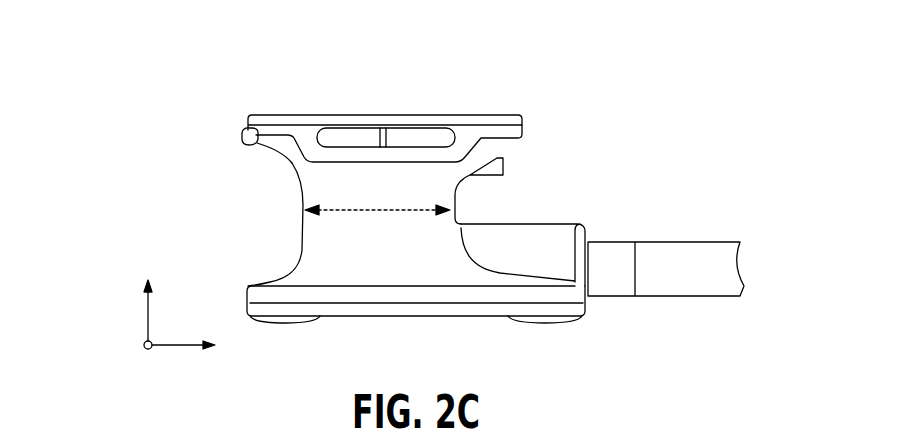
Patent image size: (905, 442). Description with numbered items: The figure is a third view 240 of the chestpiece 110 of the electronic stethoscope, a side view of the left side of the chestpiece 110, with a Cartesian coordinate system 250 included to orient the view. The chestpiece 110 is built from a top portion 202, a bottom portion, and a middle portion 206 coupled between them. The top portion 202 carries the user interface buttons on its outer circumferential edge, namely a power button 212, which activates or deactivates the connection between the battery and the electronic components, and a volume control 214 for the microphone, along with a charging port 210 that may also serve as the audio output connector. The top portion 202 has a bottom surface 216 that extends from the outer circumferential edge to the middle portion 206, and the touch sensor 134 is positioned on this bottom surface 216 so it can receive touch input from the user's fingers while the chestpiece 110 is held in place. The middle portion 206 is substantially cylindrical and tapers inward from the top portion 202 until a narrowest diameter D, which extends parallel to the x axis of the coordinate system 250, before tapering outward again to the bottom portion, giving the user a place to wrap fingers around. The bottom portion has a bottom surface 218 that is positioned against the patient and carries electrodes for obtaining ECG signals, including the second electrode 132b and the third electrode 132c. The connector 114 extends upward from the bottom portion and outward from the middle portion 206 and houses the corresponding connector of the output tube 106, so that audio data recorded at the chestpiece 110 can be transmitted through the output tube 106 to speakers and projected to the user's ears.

The chestpiece 110 is at (389, 210).
The top portion 202 is at (282, 117).
The volume control 214 is at (357, 137).
The touch sensor 134 is at (418, 152).
The power button 212 is at (242, 134).
The bottom surface 216 is at (272, 150).
The middle portion 206 is at (316, 242).
The narrowest diameter D is at (347, 210).
The charging port 210 is at (503, 158).
The connector 114 is at (553, 234).
The output tube 106 is at (693, 252).
The bottom surface 218 is at (381, 318).
The third electrode 132c is at (300, 318).
The second electrode 132b is at (540, 318).
The third view 240 is at (676, 76).
The Cartesian coordinate system 250 is at (127, 298).